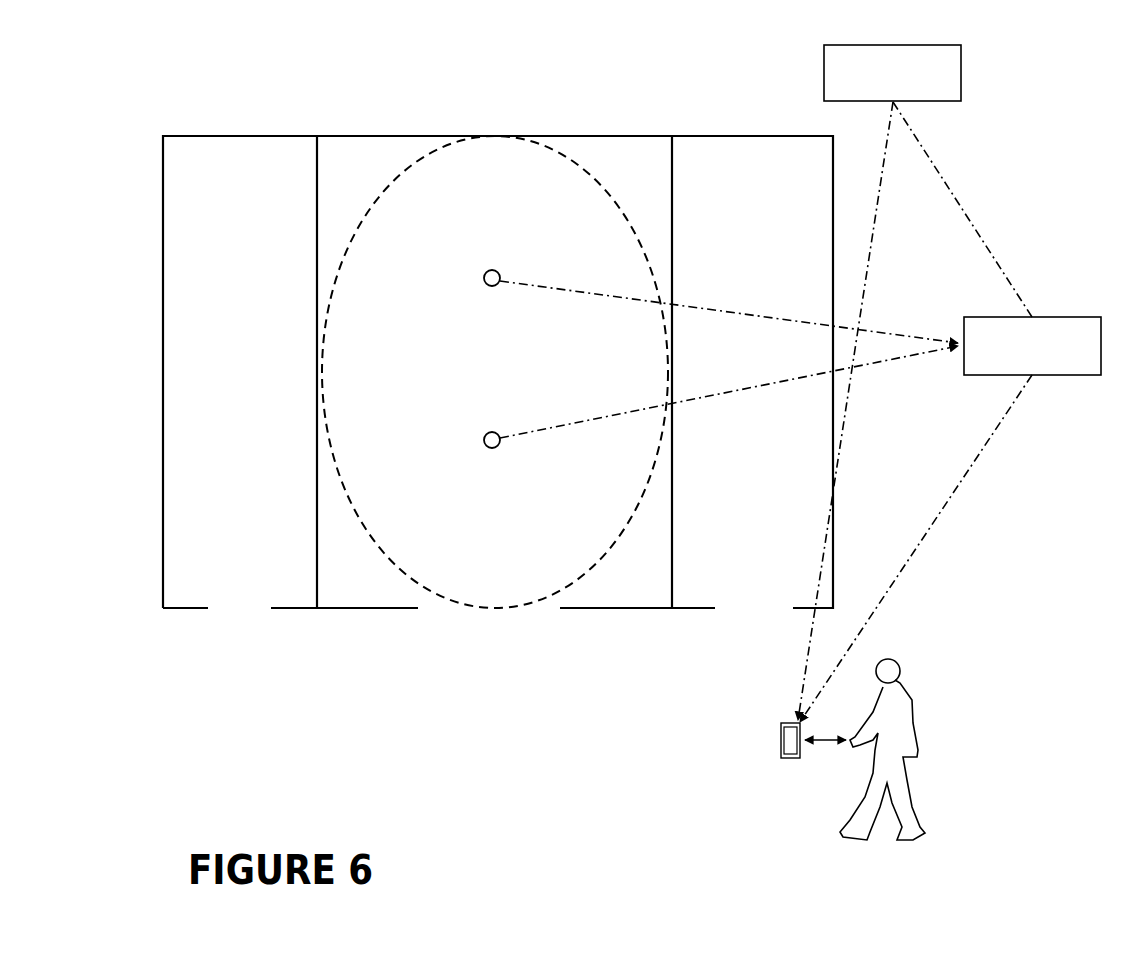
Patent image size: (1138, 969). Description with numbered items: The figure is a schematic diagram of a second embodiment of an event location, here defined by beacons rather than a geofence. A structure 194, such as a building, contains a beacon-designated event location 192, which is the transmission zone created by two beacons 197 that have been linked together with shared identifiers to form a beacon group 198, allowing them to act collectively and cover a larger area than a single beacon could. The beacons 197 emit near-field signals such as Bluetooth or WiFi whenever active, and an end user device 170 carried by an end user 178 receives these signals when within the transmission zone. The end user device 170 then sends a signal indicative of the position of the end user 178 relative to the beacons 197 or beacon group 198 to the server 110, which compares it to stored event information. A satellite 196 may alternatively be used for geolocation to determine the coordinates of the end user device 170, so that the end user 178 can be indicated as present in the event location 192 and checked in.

The structure 194 is at (140, 148).
The event location 192 is at (590, 172).
The beacon group 198 is at (433, 314).
The beacons 197 is at (492, 270).
The satellite 196 is at (961, 60).
The server 110 is at (1062, 316).
The end user device 170 is at (781, 740).
The end user 178 is at (907, 690).